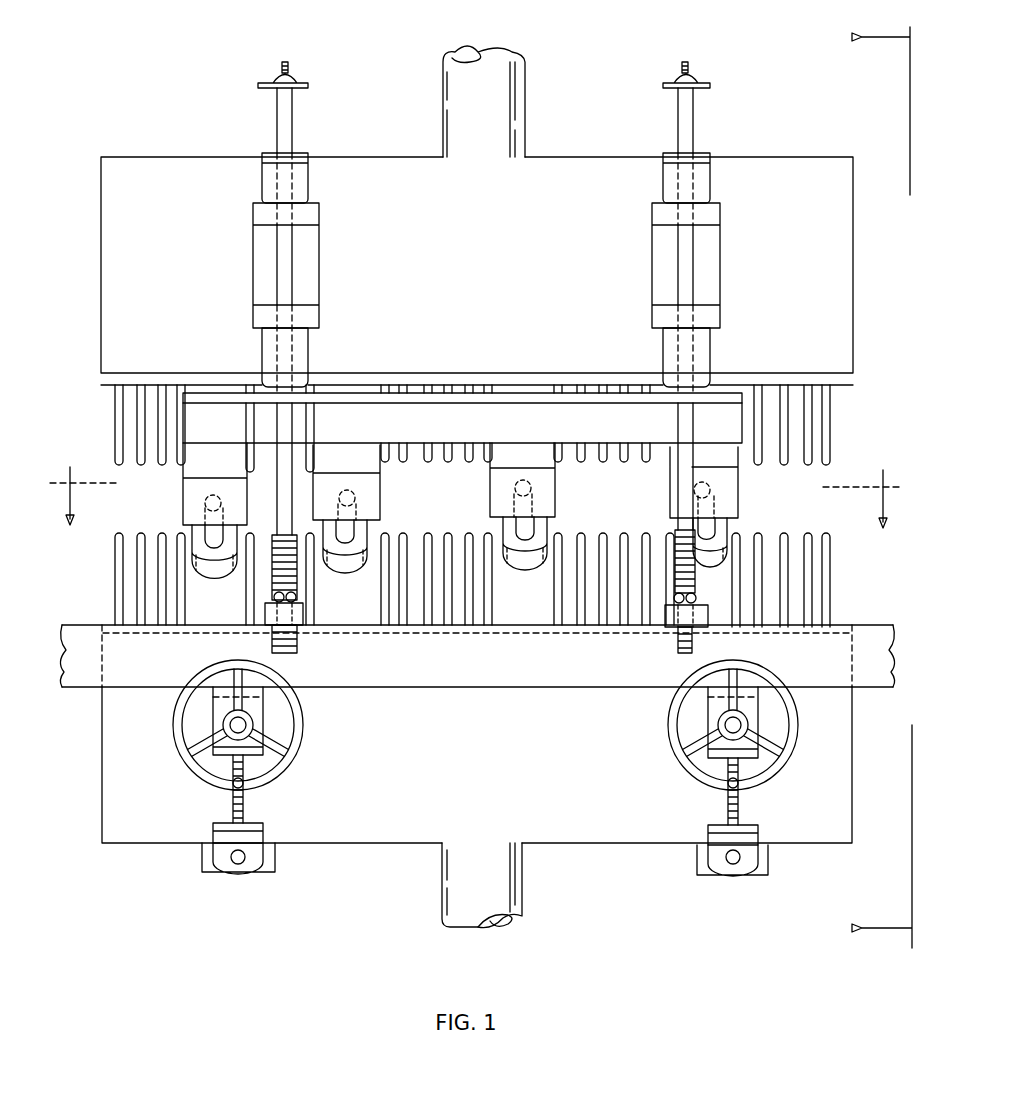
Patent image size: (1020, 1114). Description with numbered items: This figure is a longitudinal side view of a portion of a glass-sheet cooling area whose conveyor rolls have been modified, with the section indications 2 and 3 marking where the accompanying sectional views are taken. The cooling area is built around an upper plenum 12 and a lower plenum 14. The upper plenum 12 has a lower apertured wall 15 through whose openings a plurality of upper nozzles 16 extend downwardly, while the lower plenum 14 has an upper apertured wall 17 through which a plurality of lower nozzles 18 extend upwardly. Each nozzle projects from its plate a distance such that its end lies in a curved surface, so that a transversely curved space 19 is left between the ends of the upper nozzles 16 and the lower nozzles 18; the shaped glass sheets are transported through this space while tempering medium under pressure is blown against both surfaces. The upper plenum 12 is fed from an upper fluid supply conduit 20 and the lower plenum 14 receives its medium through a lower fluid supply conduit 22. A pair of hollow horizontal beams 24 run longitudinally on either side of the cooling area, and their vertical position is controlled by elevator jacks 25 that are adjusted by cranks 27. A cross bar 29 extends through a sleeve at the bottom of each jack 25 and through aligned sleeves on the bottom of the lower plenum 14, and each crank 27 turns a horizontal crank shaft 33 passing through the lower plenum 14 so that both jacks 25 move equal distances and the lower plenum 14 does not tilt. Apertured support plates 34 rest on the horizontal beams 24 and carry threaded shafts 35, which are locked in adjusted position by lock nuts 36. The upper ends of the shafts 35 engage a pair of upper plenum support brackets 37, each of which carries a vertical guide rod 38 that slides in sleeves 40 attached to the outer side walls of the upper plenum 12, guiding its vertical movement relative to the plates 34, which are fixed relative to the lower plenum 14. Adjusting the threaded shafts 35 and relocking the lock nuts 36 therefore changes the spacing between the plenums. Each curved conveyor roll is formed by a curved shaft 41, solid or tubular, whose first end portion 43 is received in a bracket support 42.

The section line 2- 2 is at (892, 487).
The section line 3- 3 is at (475, 486).
The upper plenum 12 is at (472, 273).
The lower plenum 14 is at (470, 759).
The lower apertured wall 15 is at (535, 373).
The upper nozzles 16 is at (785, 463).
The upper apertured wall 17 is at (412, 633).
The lower nozzles 18 is at (163, 537).
The transversely curved space 19 is at (805, 495).
The upper fluid supply conduit 20 is at (502, 78).
The lower fluid supply conduit 22 is at (470, 915).
The hollow horizontal beams 24 is at (82, 618).
The elevator jacks 25 is at (258, 798).
The cranks 27 is at (187, 755).
The cross bar 29 is at (240, 864).
The horizontal crank shaft 33 is at (236, 725).
The apertured support plates 34 is at (270, 615).
The threaded shafts 35 is at (297, 643).
The lock nuts 36 is at (273, 597).
The upper plenum support brackets 37 is at (440, 393).
The vertical guide rod 38 is at (285, 273).
The sleeves 40 is at (262, 218).
The curved shaft 41 is at (532, 487).
The bracket support 42 is at (197, 497).
The first end portion 43 is at (338, 572).